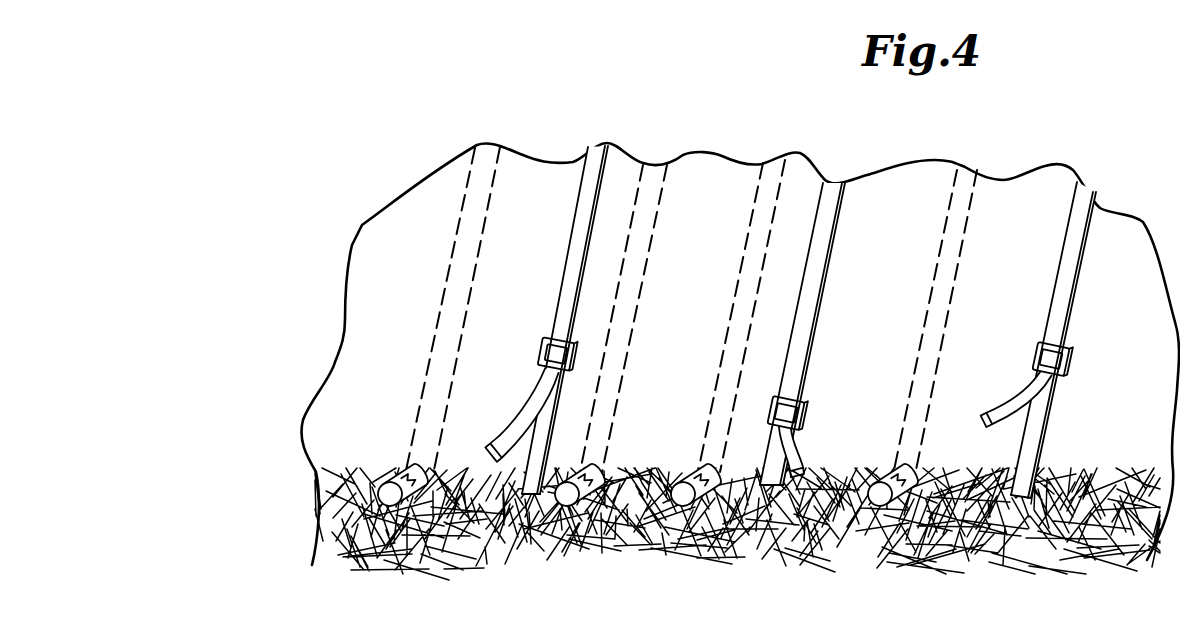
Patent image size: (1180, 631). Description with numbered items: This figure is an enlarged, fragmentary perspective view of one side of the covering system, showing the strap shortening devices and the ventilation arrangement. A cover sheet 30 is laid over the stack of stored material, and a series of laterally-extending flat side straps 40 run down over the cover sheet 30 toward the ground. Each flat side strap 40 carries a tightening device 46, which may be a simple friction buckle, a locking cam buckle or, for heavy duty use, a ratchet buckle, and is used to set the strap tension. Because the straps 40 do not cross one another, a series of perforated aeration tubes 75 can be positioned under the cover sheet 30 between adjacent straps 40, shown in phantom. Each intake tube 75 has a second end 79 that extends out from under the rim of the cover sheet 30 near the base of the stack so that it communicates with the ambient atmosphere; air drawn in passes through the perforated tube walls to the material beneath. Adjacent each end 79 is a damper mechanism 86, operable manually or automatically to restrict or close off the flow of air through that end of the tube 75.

The cover sheet 30 is at (360, 355).
The flat side strap 40 is at (580, 247).
The tightening device 46 is at (540, 353).
The perforated aeration tube 75 is at (443, 345).
The second end of intake tube 79 is at (390, 480).
The damper mechanism 86 is at (485, 482).